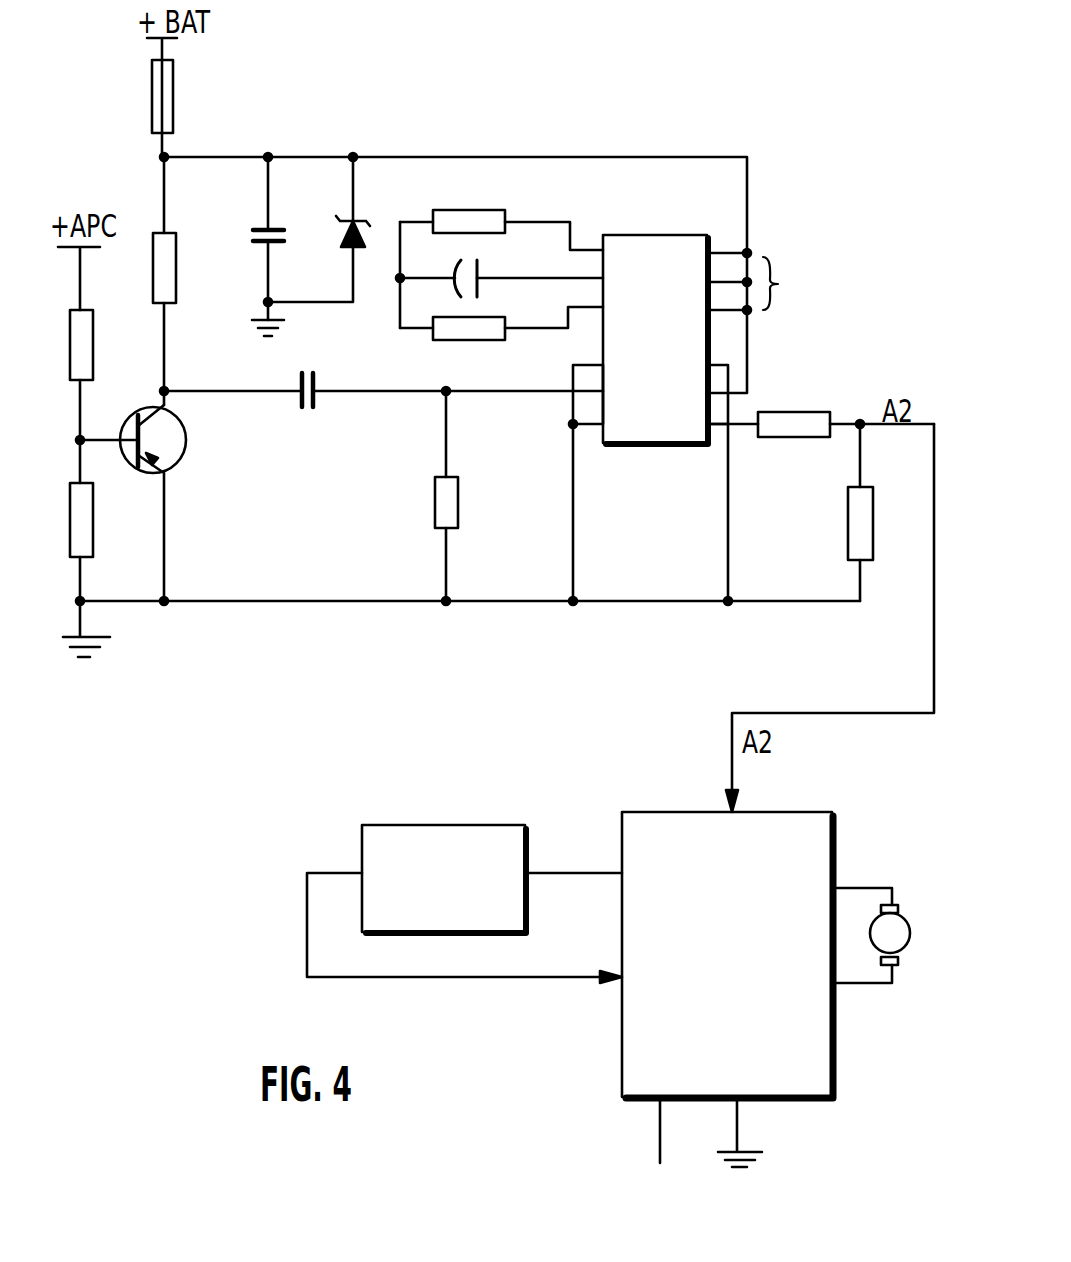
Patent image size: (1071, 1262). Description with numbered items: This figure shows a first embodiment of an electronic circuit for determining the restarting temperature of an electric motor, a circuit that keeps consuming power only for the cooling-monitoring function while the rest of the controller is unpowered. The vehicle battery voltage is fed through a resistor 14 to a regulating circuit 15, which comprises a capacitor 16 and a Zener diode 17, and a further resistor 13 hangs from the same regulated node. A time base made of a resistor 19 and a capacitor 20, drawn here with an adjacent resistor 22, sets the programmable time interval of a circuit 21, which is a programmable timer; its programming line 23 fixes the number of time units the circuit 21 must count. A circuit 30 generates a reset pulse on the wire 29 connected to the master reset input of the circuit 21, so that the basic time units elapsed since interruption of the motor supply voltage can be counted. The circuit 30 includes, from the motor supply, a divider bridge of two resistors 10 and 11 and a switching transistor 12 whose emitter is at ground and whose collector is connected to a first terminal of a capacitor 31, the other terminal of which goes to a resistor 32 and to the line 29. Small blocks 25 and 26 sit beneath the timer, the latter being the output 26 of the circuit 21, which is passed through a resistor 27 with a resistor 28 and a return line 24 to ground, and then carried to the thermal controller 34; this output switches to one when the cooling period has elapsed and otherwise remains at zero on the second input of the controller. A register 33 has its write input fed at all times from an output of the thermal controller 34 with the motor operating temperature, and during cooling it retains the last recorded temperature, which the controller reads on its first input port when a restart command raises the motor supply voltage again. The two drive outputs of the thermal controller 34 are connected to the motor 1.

The motor 1 is at (910, 947).
The resistor 10 is at (95, 362).
The resistor 11 is at (95, 527).
The switching transistor 12 is at (187, 452).
The resistor 13 is at (177, 259).
The resistor 14 is at (174, 110).
The regulating circuit 15 is at (333, 142).
The capacitor 16 is at (262, 224).
The Zener diode 17 is at (358, 215).
The resistor 19 is at (483, 210).
The capacitor 20 is at (483, 275).
The programmable timer circuit 21 is at (650, 430).
The resistor 22 is at (485, 318).
The line 23 is at (765, 258).
The ground connection 24 is at (729, 488).
The output stage 25 is at (573, 513).
The output Q 26 is at (721, 426).
The resistor 27 is at (818, 395).
The resistor 28 is at (853, 526).
The wire 29 is at (525, 394).
The circuit 30 is at (353, 500).
The capacitor 31 is at (320, 382).
The resistor 32 is at (459, 499).
The register 33 is at (455, 823).
The thermal controller 34 is at (783, 1099).